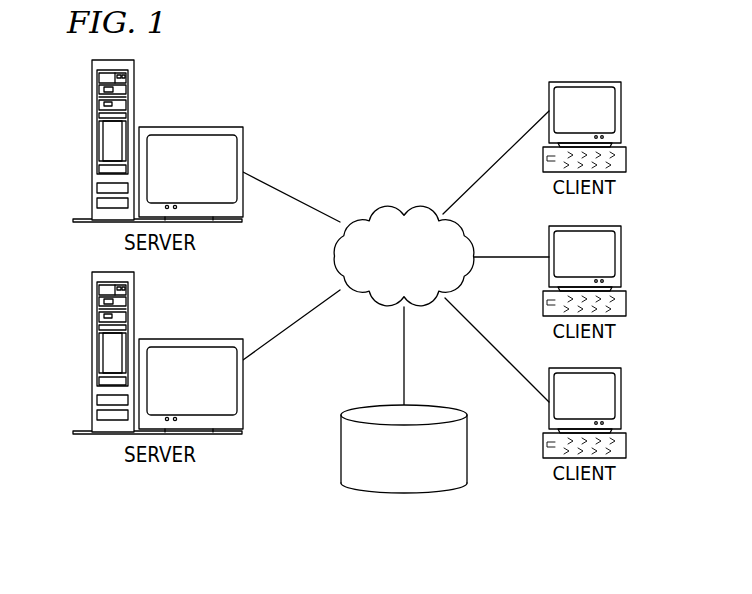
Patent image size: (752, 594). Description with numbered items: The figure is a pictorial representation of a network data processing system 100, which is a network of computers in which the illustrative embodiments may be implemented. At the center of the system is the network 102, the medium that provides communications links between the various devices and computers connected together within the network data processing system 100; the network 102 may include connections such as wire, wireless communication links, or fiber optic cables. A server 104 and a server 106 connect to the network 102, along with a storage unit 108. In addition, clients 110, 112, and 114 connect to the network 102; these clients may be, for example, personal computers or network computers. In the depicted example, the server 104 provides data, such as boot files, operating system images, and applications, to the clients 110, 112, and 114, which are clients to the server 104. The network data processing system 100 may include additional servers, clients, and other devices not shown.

The network data processing system 100 is at (456, 88).
The network 102 is at (376, 205).
The server 104 is at (92, 141).
The server 106 is at (92, 352).
The storage unit 108 is at (388, 492).
The client 110 is at (621, 111).
The client 112 is at (621, 256).
The client 114 is at (621, 398).